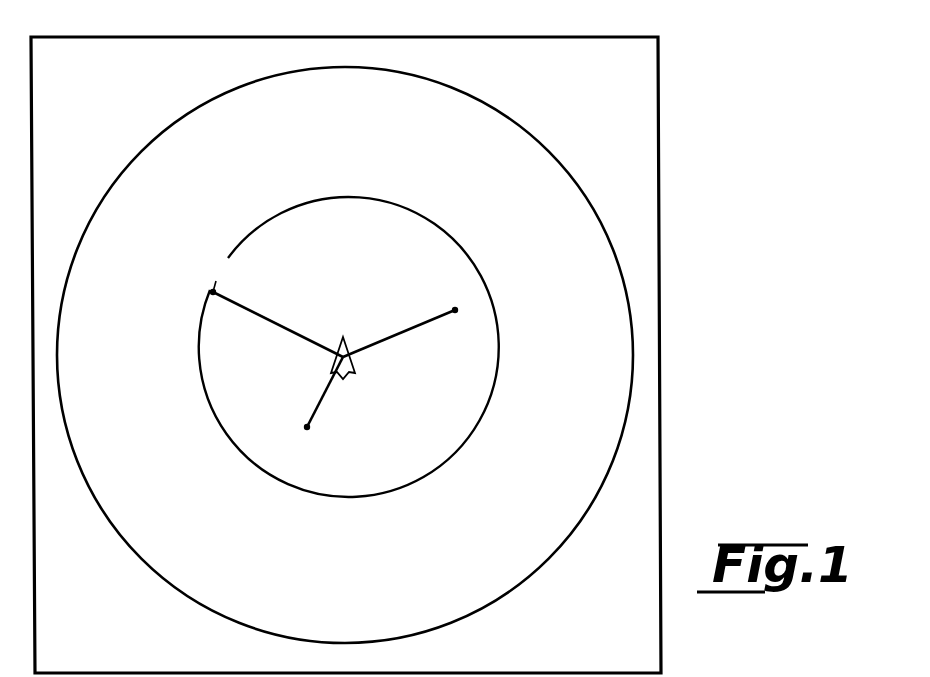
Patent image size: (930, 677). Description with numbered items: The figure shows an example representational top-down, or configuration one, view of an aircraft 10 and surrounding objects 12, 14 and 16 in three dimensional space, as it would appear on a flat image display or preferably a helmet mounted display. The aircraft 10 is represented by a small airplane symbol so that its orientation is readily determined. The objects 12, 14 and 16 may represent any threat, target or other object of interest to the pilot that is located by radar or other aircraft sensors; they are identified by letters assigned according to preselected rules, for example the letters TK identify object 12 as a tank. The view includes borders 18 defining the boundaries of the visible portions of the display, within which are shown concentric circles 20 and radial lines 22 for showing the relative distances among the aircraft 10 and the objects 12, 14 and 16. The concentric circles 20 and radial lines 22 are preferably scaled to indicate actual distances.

The aircraft 10 is at (352, 365).
The object 12 is at (213, 291).
The object 14 is at (456, 316).
The object 16 is at (305, 425).
The borders 18 is at (659, 316).
The concentric circles 20 is at (445, 465).
The radial lines 22 is at (255, 308).